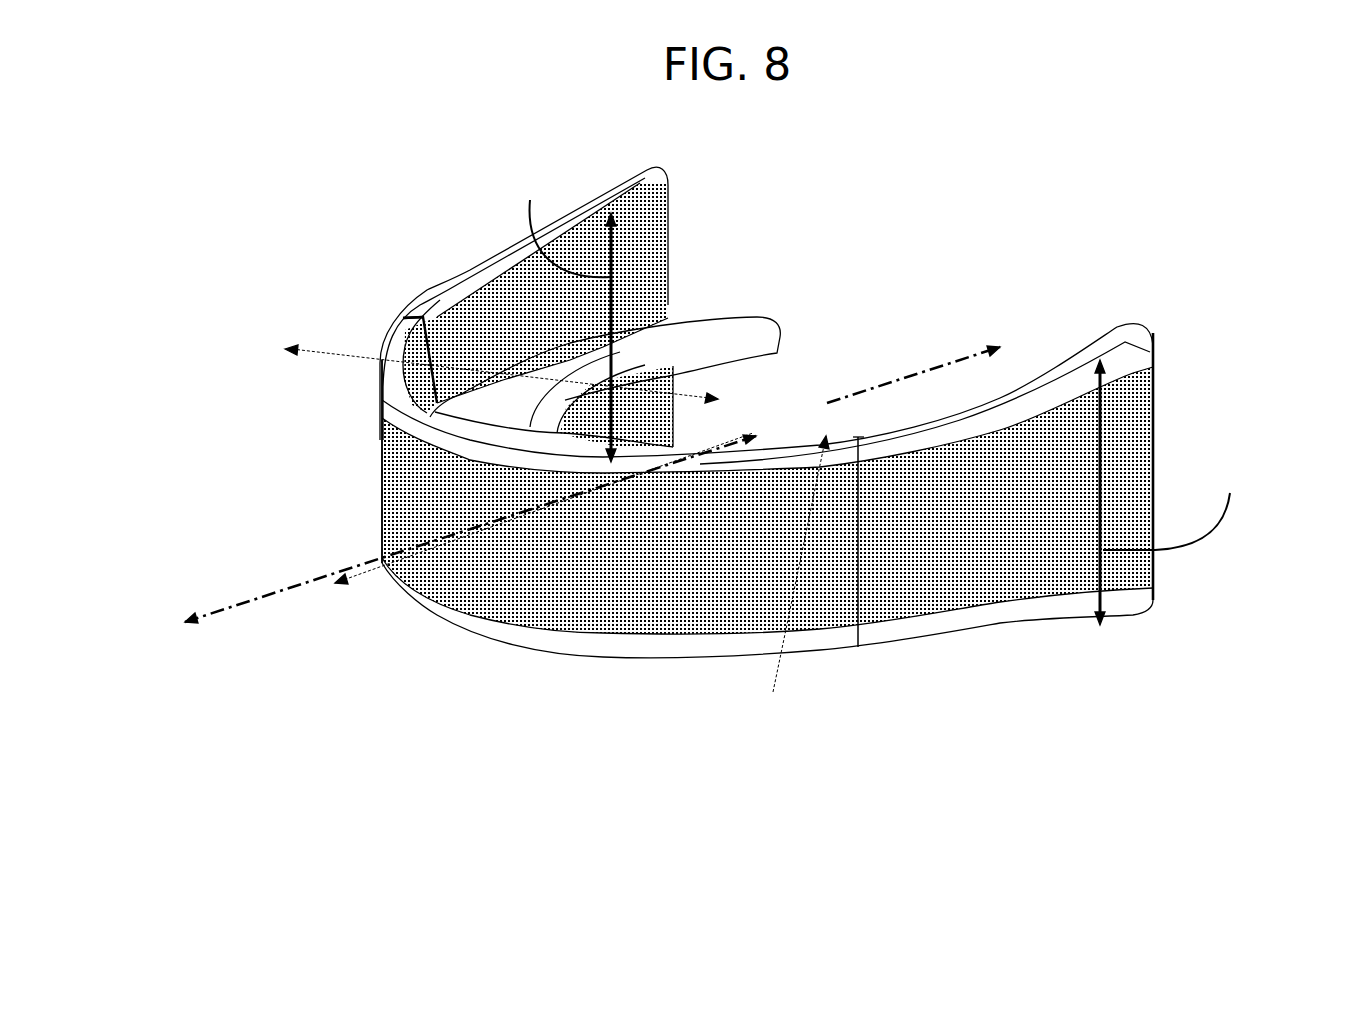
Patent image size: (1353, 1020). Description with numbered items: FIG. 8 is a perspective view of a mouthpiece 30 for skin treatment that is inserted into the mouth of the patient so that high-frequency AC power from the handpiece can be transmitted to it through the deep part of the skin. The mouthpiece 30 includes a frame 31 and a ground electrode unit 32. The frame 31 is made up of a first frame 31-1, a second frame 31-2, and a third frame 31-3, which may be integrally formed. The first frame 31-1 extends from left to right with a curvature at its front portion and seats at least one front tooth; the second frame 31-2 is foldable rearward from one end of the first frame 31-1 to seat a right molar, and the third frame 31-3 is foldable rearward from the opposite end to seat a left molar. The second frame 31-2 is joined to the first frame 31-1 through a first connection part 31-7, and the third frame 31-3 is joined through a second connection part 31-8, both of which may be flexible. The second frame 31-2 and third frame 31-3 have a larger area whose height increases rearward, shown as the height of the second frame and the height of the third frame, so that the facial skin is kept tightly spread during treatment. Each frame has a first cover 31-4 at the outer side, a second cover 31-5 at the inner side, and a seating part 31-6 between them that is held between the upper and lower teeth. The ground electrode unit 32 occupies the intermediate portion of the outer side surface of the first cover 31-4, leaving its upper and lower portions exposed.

The mouthpiece 30 is at (1131, 158).
The frame 31 is at (637, 768).
The first frame 31-1 is at (553, 685).
The second frame 31-2 is at (425, 247).
The third frame 31-3 is at (1050, 663).
The first cover 31-4 is at (490, 270).
The second cover 31-5 is at (738, 346).
The seating part 31-6 is at (678, 323).
The first connection part 31-7 is at (425, 342).
The second connection part 31-8 is at (860, 547).
The ground electrode unit 32 is at (460, 328).